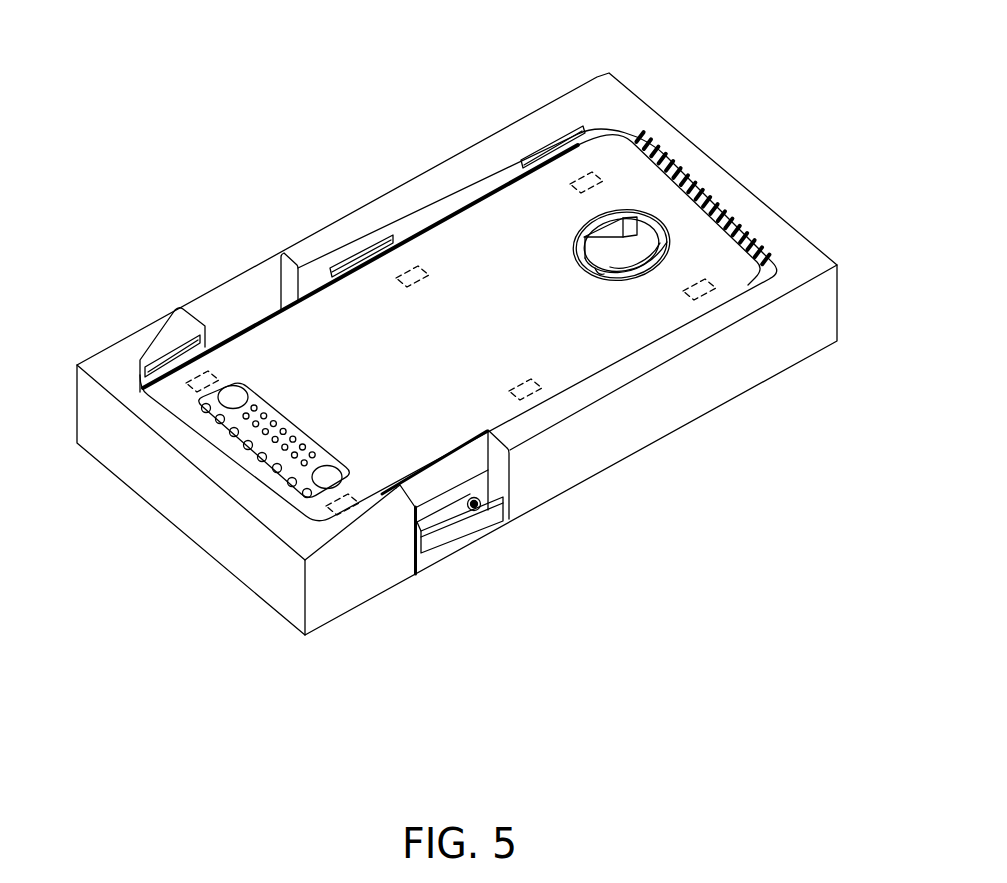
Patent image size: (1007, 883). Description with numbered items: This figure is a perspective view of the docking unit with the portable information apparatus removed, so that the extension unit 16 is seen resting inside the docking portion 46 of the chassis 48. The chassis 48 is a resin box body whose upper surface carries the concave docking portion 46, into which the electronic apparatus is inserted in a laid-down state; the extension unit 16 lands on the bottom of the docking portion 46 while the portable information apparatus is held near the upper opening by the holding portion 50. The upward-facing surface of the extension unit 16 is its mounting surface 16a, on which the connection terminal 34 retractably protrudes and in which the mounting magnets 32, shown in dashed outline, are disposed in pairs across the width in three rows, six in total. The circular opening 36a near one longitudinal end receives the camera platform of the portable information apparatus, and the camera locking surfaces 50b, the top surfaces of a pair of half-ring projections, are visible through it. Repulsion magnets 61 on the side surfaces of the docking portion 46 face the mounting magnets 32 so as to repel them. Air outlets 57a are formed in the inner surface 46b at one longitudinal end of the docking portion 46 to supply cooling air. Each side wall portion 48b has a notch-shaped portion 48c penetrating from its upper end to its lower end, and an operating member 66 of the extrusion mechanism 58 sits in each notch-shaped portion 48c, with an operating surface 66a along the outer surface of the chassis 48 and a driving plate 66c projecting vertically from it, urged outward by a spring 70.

The extension unit 16 is at (237, 447).
The mounting surface 16a is at (565, 345).
The mounting magnets 32 is at (577, 165).
The connection terminal 34 is at (323, 393).
The opening 36a is at (597, 276).
The docking portion 46 is at (374, 199).
The inner surface 46b is at (640, 140).
The chassis 48 is at (263, 567).
The side wall portions 48b is at (462, 165).
The notch-shaped portion 48c is at (197, 312).
The holding portion 50 is at (688, 342).
The camera locking surfaces 50b is at (593, 240).
The air outlets 57a is at (690, 195).
The extrusion mechanism 58 is at (474, 546).
The repulsion magnets 61 is at (168, 355).
The operating members 66 is at (238, 332).
The operating surface 66a is at (488, 522).
The driving plate 66c is at (467, 522).
The spring 70 is at (483, 500).